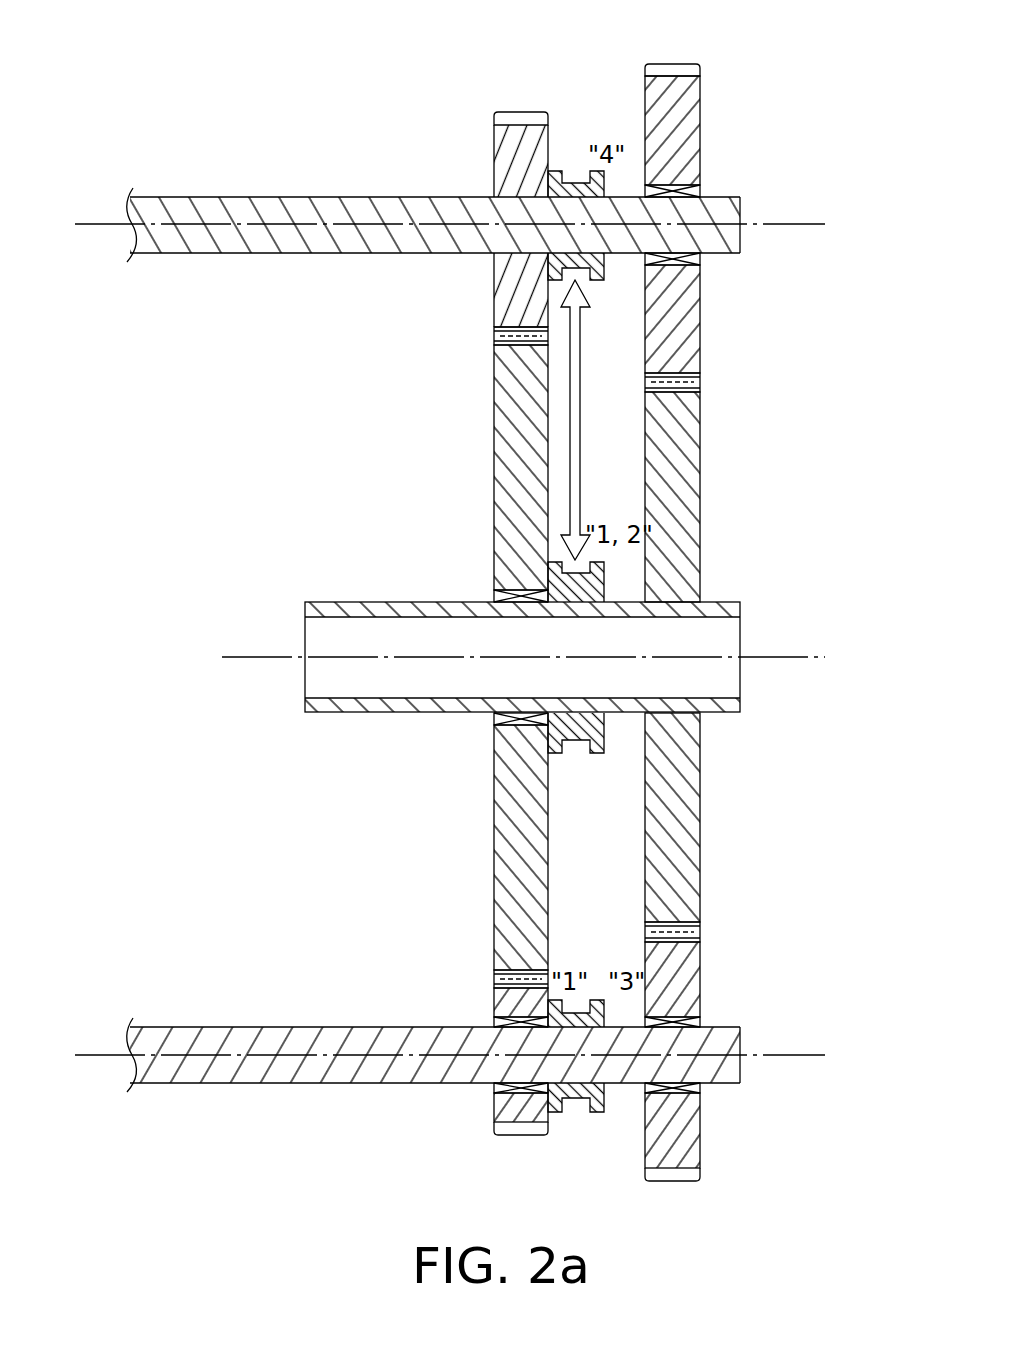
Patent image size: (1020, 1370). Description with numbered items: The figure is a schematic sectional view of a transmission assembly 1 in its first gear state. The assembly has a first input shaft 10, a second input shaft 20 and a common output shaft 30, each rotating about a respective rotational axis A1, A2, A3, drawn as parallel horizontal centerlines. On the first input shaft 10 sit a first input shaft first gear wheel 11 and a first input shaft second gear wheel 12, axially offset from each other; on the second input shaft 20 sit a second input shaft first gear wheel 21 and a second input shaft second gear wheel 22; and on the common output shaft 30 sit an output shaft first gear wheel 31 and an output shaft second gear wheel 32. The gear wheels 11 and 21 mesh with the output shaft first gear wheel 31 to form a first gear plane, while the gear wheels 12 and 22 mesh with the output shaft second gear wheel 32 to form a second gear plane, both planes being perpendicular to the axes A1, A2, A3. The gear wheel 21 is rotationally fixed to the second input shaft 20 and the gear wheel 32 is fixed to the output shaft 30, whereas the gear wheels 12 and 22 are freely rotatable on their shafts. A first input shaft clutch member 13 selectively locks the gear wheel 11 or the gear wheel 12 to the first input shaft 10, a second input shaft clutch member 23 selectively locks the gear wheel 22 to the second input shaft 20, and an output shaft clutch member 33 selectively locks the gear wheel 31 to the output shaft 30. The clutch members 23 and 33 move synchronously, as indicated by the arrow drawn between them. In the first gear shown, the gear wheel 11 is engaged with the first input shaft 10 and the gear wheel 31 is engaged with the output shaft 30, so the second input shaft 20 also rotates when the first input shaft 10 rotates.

The transmission assembly 1 is at (334, 31).
The first input shaft 10 is at (300, 1027).
The first input shaft first gear wheel 11 is at (494, 1003).
The first input shaft second gear wheel 12 is at (700, 960).
The first input shaft clutch member 13 is at (604, 1010).
The second input shaft 20 is at (297, 197).
The second input shaft first gear wheel 21 is at (494, 147).
The second input shaft second gear wheel 22 is at (700, 118).
The second input shaft clutch member 23 is at (573, 183).
The common output shaft 30 is at (424, 602).
The output shaft first gear wheel 31 is at (494, 467).
The output shaft second gear wheel 32 is at (700, 477).
The output shaft clutch member 33 is at (604, 573).
The rotational axis of the first input shaft A1 is at (95, 1055).
The rotational axis of the second input shaft A2 is at (93, 224).
The rotational axis of the common output shaft A3 is at (245, 657).